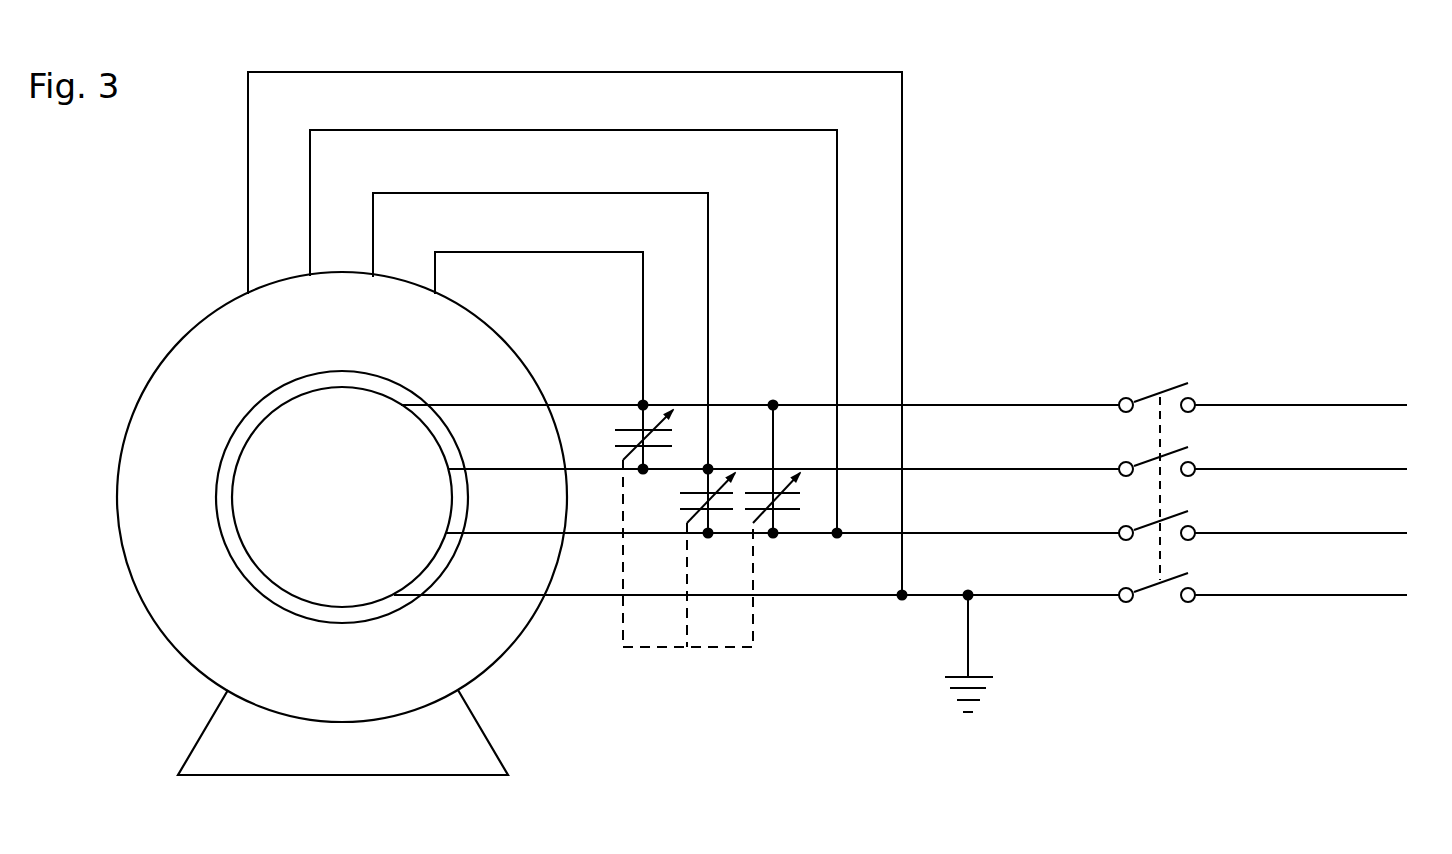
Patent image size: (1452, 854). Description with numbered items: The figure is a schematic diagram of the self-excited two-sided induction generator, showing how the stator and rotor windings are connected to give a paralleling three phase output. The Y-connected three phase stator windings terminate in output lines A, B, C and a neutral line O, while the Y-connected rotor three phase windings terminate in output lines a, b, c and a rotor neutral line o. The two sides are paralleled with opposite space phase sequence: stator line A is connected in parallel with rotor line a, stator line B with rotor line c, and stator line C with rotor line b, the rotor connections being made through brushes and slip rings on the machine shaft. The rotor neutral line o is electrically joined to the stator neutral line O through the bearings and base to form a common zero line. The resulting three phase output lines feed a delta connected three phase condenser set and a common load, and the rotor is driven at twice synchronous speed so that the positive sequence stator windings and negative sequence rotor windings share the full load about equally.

The stator output line A is at (915, 332).
The stator output line B is at (884, 334).
The stator output line C is at (851, 335).
The stator neutral line O is at (820, 337).
The rotor output line a is at (744, 418).
The rotor output line b is at (769, 526).
The rotor output line c is at (770, 468).
The rotor neutral line o is at (742, 583).